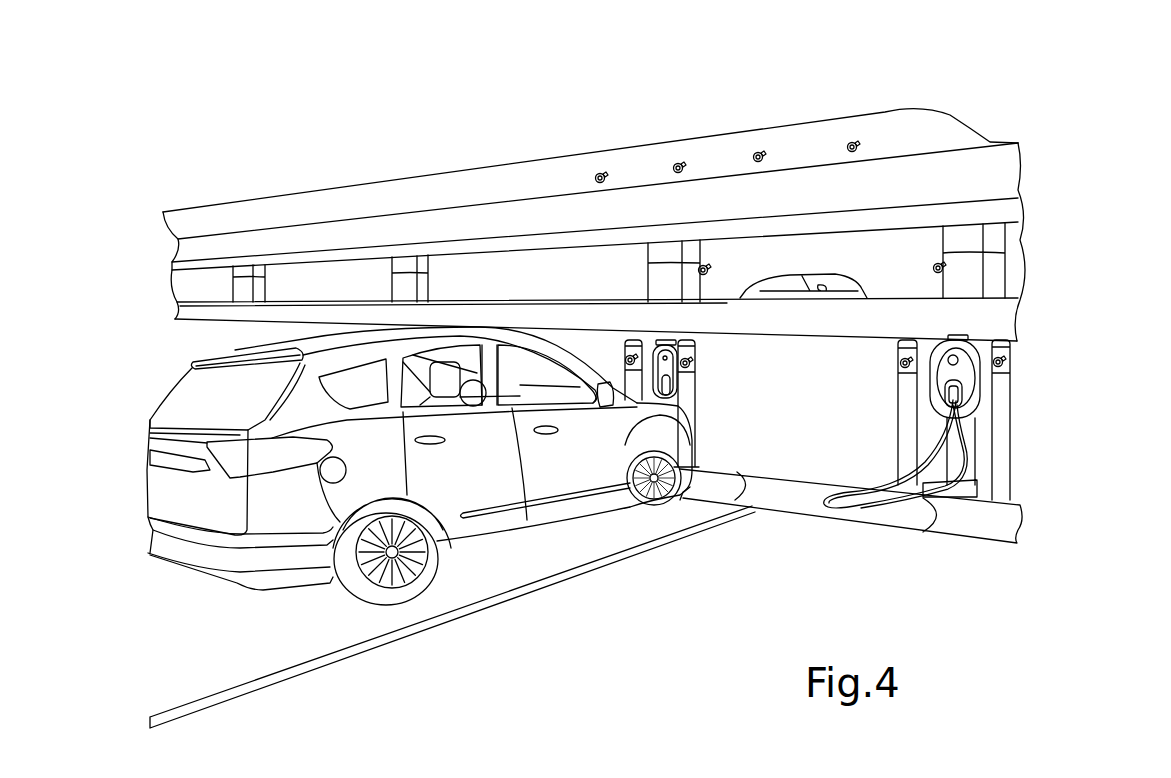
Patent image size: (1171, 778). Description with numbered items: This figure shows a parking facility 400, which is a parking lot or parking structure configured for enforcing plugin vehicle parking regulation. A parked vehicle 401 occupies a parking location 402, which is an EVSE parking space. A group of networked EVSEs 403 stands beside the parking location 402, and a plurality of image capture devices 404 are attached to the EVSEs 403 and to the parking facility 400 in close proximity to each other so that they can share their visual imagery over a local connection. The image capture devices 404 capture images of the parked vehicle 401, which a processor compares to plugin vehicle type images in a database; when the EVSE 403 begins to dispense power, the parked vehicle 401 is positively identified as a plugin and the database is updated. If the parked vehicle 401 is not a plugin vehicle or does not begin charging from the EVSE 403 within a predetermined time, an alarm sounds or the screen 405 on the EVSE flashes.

The parking facility 400 is at (965, 104).
The parked vehicle 401 is at (235, 350).
The parking location 402 is at (582, 547).
The EVSE 403 is at (709, 403).
The image capture devices 404 is at (603, 175).
The screen 405 is at (670, 355).